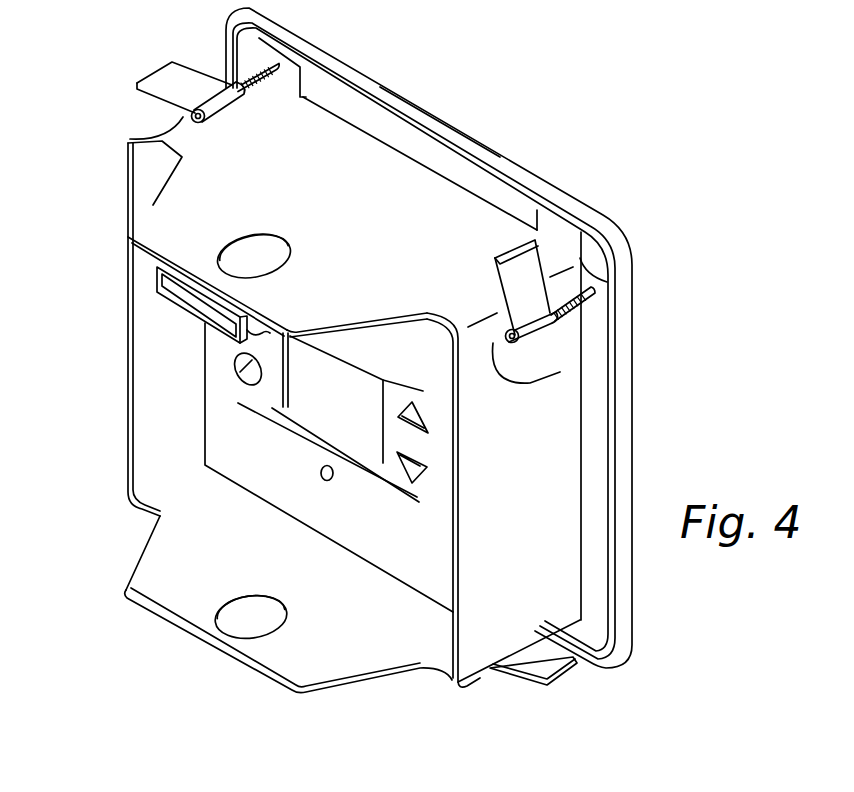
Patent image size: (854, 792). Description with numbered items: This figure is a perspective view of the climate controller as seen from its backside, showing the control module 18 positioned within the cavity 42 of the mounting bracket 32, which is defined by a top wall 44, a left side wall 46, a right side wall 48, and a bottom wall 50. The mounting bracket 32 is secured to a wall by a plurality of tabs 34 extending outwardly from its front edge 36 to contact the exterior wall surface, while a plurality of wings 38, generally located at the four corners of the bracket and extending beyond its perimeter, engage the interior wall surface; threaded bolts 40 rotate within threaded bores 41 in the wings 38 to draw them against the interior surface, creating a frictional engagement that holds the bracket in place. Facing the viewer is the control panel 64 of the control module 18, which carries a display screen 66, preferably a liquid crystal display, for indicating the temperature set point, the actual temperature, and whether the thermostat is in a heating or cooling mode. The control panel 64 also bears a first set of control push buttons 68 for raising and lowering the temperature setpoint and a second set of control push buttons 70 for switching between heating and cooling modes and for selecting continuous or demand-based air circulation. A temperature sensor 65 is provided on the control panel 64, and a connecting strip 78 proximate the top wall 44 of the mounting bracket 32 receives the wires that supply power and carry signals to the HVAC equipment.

The control module 18 is at (426, 560).
The mounting bracket 32 is at (155, 412).
The tabs 34 is at (340, 118).
The front edge 36 is at (378, 100).
The wings 38 is at (163, 88).
The threaded bolts 40 is at (257, 70).
The threaded bores 41 is at (165, 140).
The cavity 42 is at (210, 513).
The top wall 44 is at (182, 205).
The left side wall 46 is at (552, 480).
The right side wall 48 is at (162, 336).
The bottom wall 50 is at (220, 582).
The control panel 64 is at (270, 470).
The temperature sensor 65 is at (268, 622).
The display screen 66 is at (322, 372).
The first set of control push buttons 68 is at (425, 462).
The second set of control push buttons 70 is at (238, 378).
The connecting strip 78 is at (160, 292).